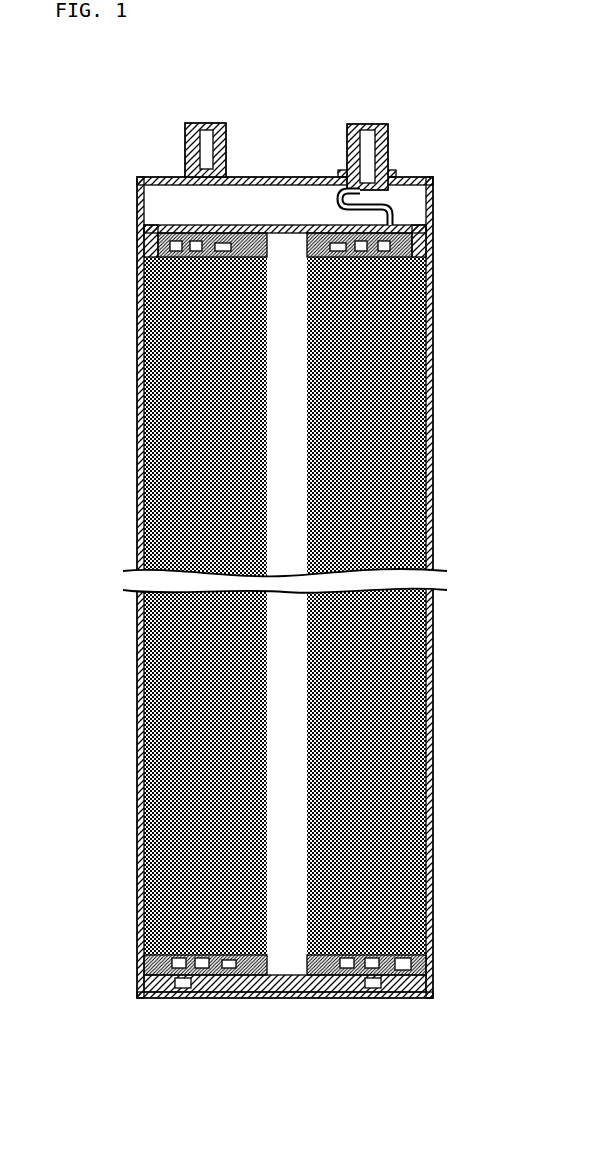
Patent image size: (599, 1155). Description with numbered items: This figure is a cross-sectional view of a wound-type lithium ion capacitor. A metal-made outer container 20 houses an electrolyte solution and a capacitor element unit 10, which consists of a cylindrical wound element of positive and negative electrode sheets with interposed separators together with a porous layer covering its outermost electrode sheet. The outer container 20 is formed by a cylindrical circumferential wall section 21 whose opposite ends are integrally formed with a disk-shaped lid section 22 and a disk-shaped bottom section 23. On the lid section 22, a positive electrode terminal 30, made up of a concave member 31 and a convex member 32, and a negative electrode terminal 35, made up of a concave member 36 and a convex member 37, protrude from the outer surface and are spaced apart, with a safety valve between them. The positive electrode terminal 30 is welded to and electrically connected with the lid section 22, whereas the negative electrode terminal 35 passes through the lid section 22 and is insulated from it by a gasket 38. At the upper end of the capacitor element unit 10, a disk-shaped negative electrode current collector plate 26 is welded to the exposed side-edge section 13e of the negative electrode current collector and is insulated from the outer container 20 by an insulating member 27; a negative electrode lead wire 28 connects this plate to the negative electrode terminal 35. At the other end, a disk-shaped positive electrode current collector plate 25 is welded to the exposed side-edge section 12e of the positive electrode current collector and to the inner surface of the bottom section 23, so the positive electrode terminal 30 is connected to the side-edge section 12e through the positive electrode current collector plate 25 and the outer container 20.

The capacitor element unit 10 is at (158, 364).
The side-edge section of positive electrode current collector 12e is at (150, 965).
The side-edge section of negative electrode current collector 13e is at (150, 243).
The outer container 20 is at (140, 458).
The circumferential wall section 21 is at (433, 350).
The lid section 22 is at (318, 177).
The bottom section 23 is at (266, 998).
The positive electrode current collector plate 25 is at (337, 985).
The negative electrode current collector plate 26 is at (224, 233).
The insulating member 27 is at (428, 245).
The negative electrode lead wire 28 is at (393, 213).
The positive electrode terminal 30 is at (174, 130).
The concave member 31 is at (185, 152).
The convex member 32 is at (207, 123).
The negative electrode terminal 35 is at (409, 135).
The concave member 36 is at (388, 150).
The convex member 37 is at (363, 125).
The gasket 38 is at (392, 172).